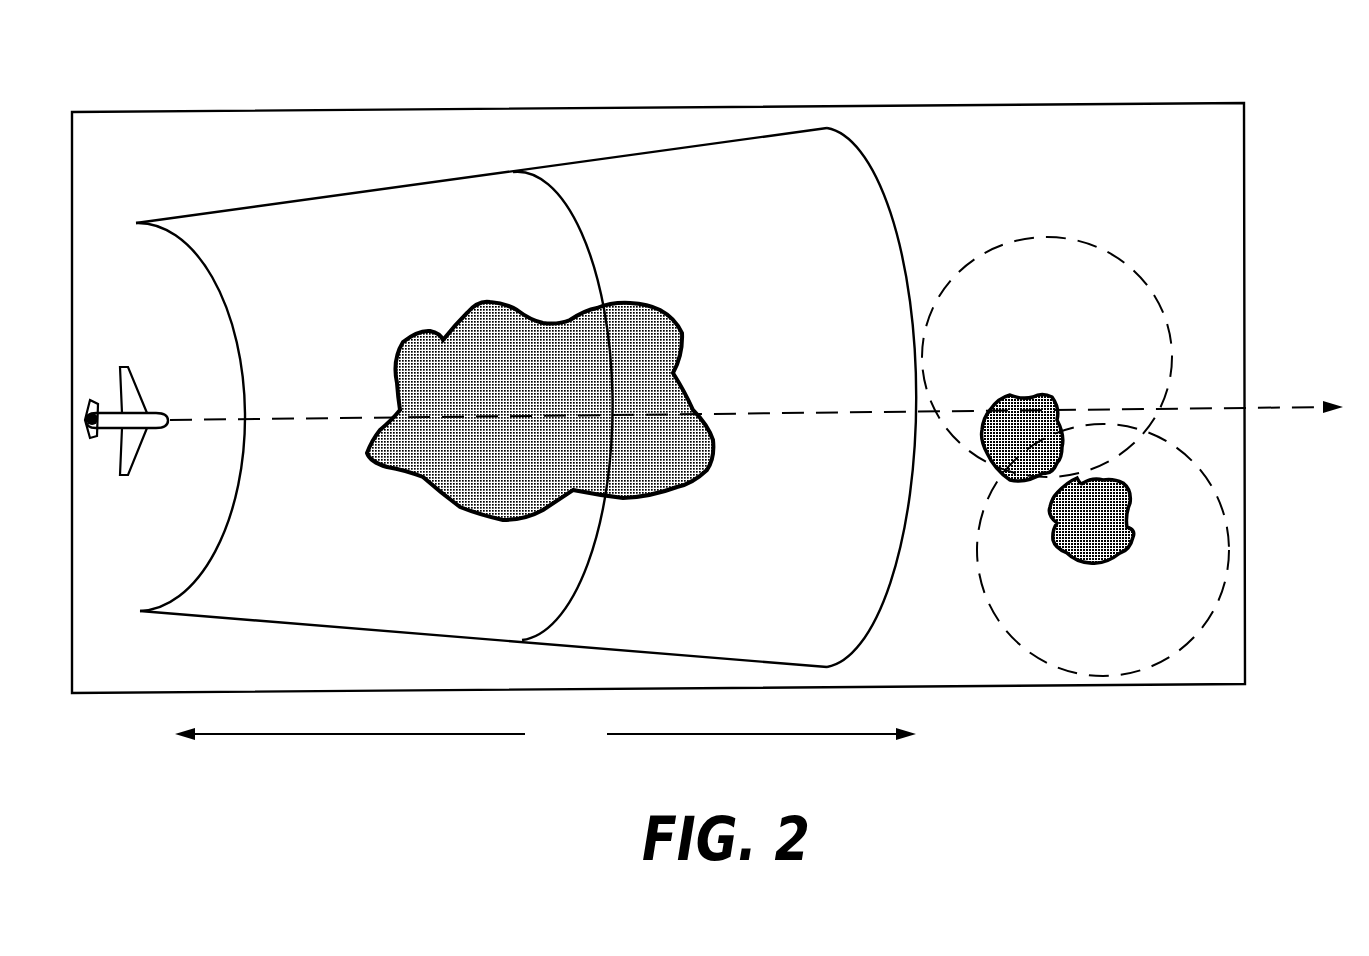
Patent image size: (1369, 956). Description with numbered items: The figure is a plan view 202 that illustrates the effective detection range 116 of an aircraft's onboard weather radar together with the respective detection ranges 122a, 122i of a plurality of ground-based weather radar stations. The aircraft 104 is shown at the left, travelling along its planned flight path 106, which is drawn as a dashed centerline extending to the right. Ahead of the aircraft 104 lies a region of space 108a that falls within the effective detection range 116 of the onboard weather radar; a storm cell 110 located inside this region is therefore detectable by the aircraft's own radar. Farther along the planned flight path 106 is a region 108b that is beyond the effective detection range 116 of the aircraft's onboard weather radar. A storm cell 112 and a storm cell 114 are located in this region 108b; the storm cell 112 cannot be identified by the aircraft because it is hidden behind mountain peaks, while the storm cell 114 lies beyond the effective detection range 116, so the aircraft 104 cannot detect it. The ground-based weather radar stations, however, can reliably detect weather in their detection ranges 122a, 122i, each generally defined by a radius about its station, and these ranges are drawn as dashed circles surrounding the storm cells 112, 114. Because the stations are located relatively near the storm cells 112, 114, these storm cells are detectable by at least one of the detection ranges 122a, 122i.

The plan view 202 is at (793, 110).
The aircraft 104 is at (103, 497).
The planned flight path 106 is at (258, 421).
The region of space 108a is at (630, 170).
The region 108b is at (1013, 151).
The storm cell 110 is at (390, 376).
The storm cell 112 is at (1050, 394).
The storm cell 114 is at (1095, 563).
The effective detection range 116 is at (545, 734).
The detection range 122i is at (1120, 262).
The detection range 122a is at (1230, 557).